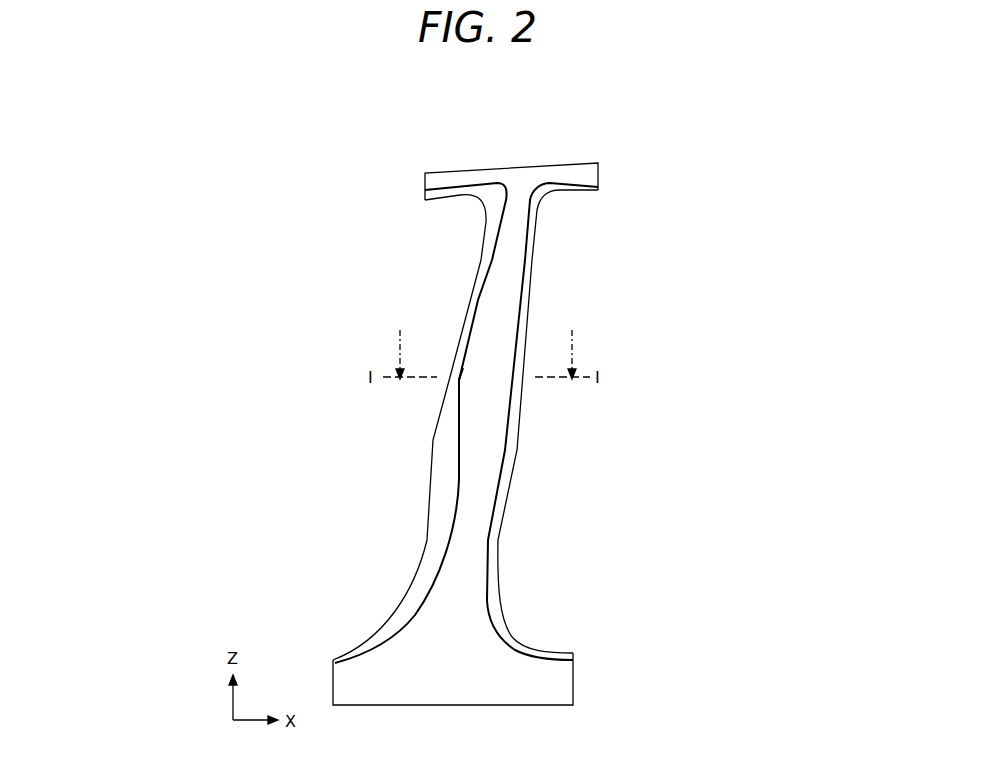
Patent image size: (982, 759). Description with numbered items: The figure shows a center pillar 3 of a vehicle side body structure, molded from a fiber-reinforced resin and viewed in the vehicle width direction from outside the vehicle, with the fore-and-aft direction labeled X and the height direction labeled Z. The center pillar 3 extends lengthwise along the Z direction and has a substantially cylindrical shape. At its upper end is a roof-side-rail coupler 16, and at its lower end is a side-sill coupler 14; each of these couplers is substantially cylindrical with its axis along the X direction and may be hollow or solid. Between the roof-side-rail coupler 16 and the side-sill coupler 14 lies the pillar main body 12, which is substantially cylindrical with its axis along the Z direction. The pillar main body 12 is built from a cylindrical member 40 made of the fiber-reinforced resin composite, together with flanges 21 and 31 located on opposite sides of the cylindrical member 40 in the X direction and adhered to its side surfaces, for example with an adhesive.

The center pillar 3 is at (488, 391).
The pillar main body 12 is at (545, 318).
The side-sill coupler 14 is at (573, 670).
The roof-side-rail coupler 16 is at (601, 165).
The flange 21 is at (440, 480).
The flange 31 is at (510, 475).
The cylindrical member 40 is at (466, 421).